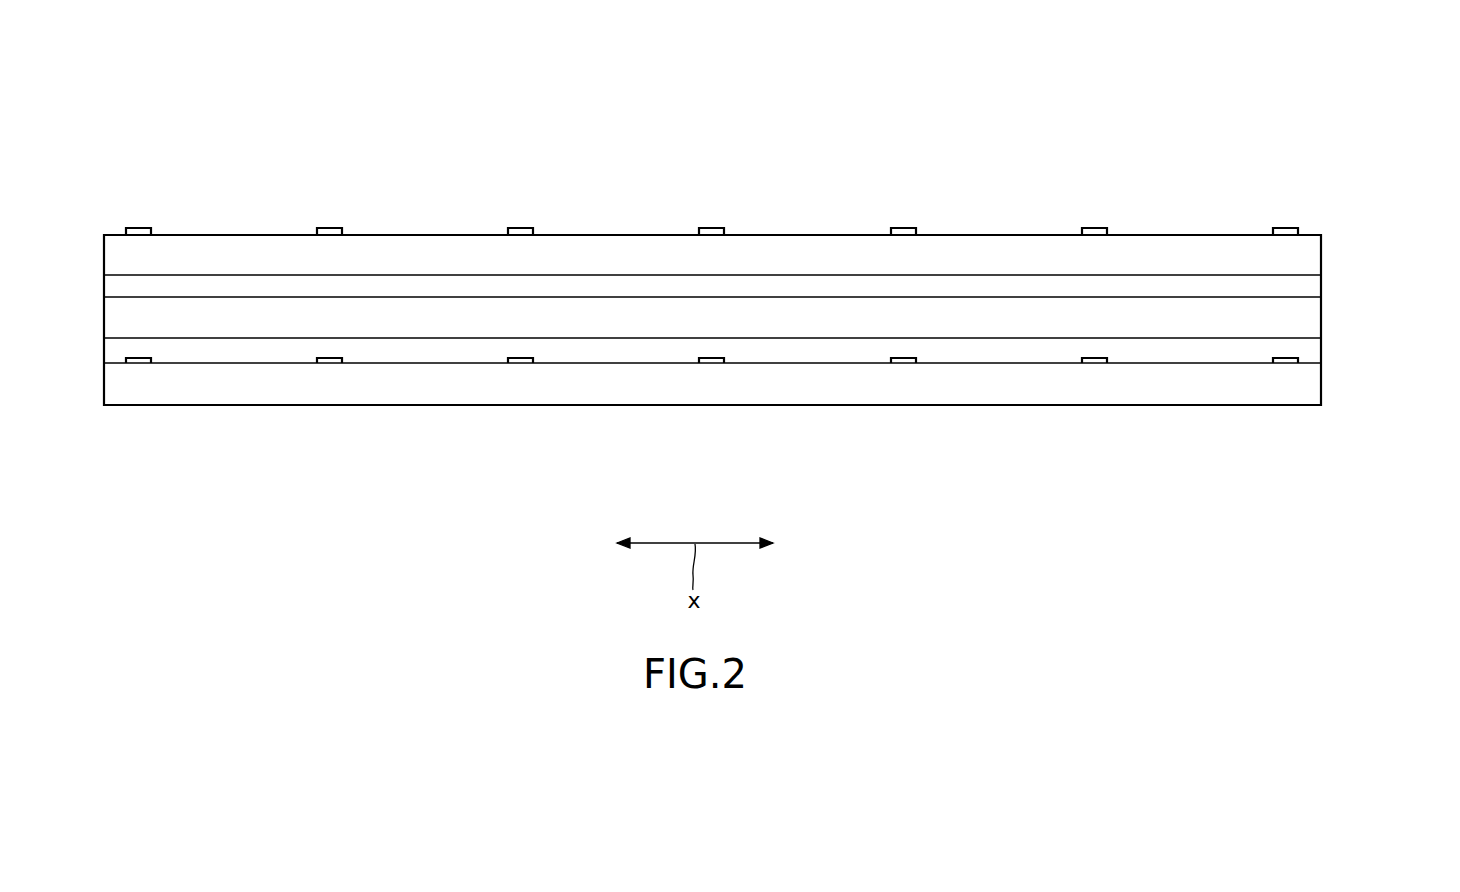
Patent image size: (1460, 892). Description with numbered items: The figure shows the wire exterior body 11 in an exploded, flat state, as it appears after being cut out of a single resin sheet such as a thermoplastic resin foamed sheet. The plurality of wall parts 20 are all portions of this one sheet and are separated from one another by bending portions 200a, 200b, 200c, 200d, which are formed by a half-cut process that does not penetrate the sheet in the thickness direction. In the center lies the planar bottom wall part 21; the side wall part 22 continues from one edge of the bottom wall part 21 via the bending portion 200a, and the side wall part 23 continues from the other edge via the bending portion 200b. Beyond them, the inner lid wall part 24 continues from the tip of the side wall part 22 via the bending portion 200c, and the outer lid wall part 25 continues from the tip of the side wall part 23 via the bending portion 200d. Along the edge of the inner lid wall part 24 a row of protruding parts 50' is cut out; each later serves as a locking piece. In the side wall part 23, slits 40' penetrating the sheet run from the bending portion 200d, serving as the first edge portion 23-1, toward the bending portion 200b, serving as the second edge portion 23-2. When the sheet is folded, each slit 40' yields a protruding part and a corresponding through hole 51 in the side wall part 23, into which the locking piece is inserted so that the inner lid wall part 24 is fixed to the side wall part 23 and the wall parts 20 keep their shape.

The wire exterior body 11 is at (1371, 127).
The wall parts 20 is at (1311, 232).
The bottom wall part 21 is at (975, 320).
The side wall part 22 is at (1179, 288).
The side wall part 23 is at (1008, 350).
The first edge portion 23-1 is at (1210, 364).
The second edge portion 23-2 is at (1197, 337).
The inner lid wall part 24 is at (1195, 258).
The outer lid wall part 25 is at (1040, 390).
The slit 40' is at (729, 410).
The protruding part 50' is at (712, 181).
The through hole 51 is at (1273, 354).
The bending portion 200a is at (1310, 297).
The bending portion 200b is at (1310, 338).
The bending portion 200c is at (1310, 275).
The bending portion 200d is at (1310, 363).